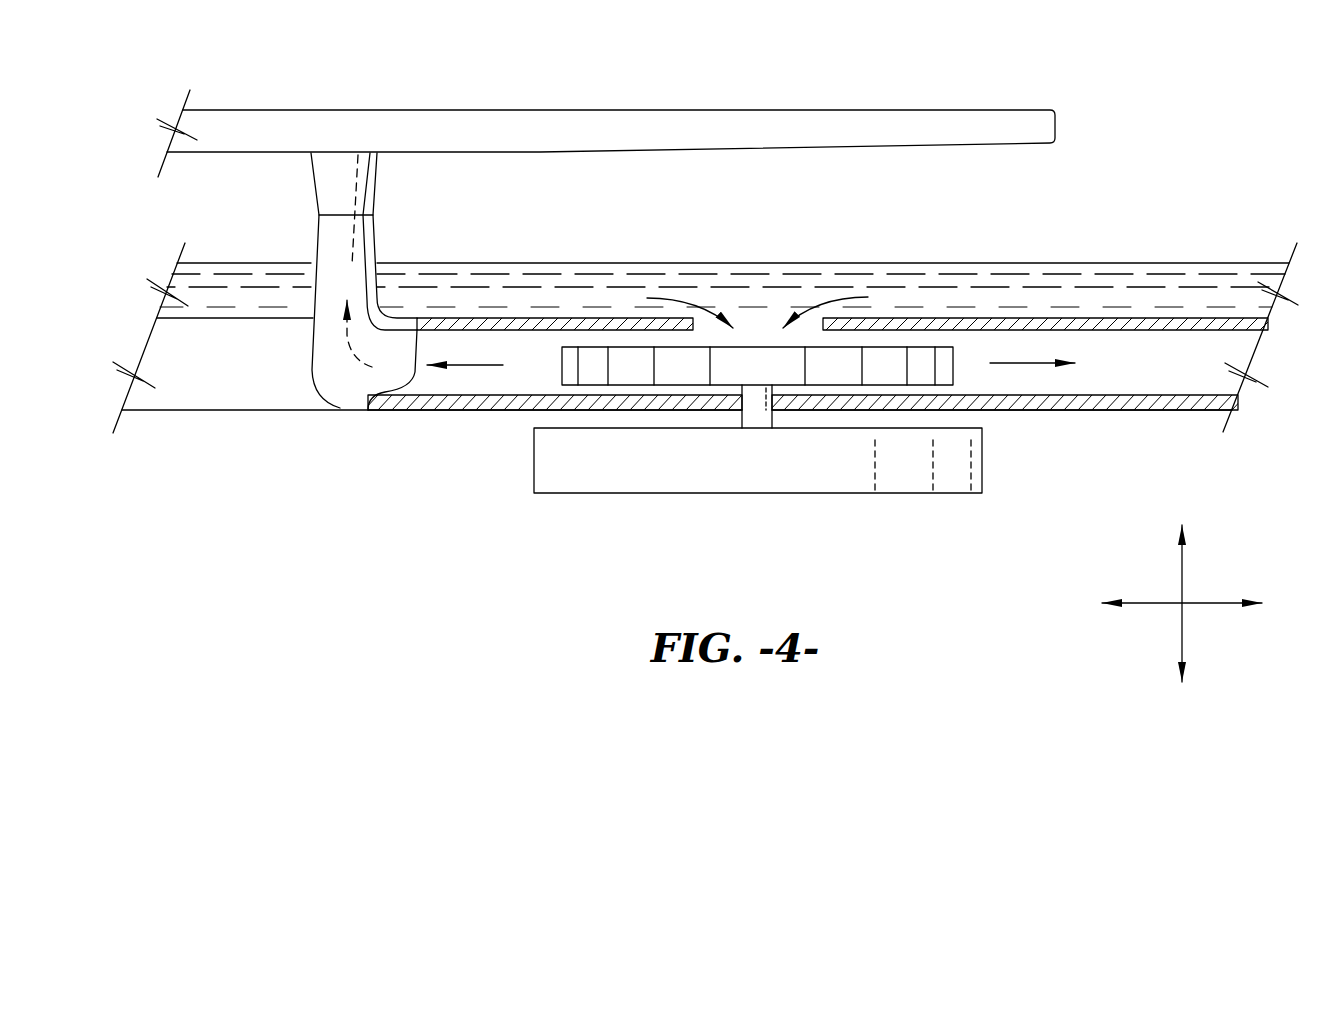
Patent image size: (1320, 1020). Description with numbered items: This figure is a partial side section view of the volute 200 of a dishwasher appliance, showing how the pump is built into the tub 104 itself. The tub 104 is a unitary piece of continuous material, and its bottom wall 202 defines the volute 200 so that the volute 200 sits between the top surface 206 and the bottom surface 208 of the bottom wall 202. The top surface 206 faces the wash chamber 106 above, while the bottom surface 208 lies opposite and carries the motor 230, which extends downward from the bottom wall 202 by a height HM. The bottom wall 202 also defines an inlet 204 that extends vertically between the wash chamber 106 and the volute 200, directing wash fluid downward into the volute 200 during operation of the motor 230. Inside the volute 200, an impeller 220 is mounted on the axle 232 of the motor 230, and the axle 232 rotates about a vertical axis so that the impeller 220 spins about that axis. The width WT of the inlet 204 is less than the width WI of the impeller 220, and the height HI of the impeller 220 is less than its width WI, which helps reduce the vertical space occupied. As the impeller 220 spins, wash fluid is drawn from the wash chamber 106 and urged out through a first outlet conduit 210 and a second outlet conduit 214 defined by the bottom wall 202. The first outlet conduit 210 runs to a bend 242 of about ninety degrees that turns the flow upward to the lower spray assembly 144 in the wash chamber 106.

The tub 104 is at (1188, 411).
The wash chamber 106 is at (265, 195).
The lower spray assembly 144 is at (890, 120).
The volute 200 is at (792, 448).
The bottom wall 202 is at (206, 388).
The inlet 204 is at (826, 316).
The top surface 206 is at (1103, 316).
The bottom surface 208 is at (1076, 412).
The first outlet conduit 210 is at (420, 408).
The second outlet conduit 214 is at (1132, 368).
The impeller 220 is at (877, 375).
The motor 230 is at (583, 470).
The axle 232 is at (758, 413).
The bend 242 is at (310, 387).